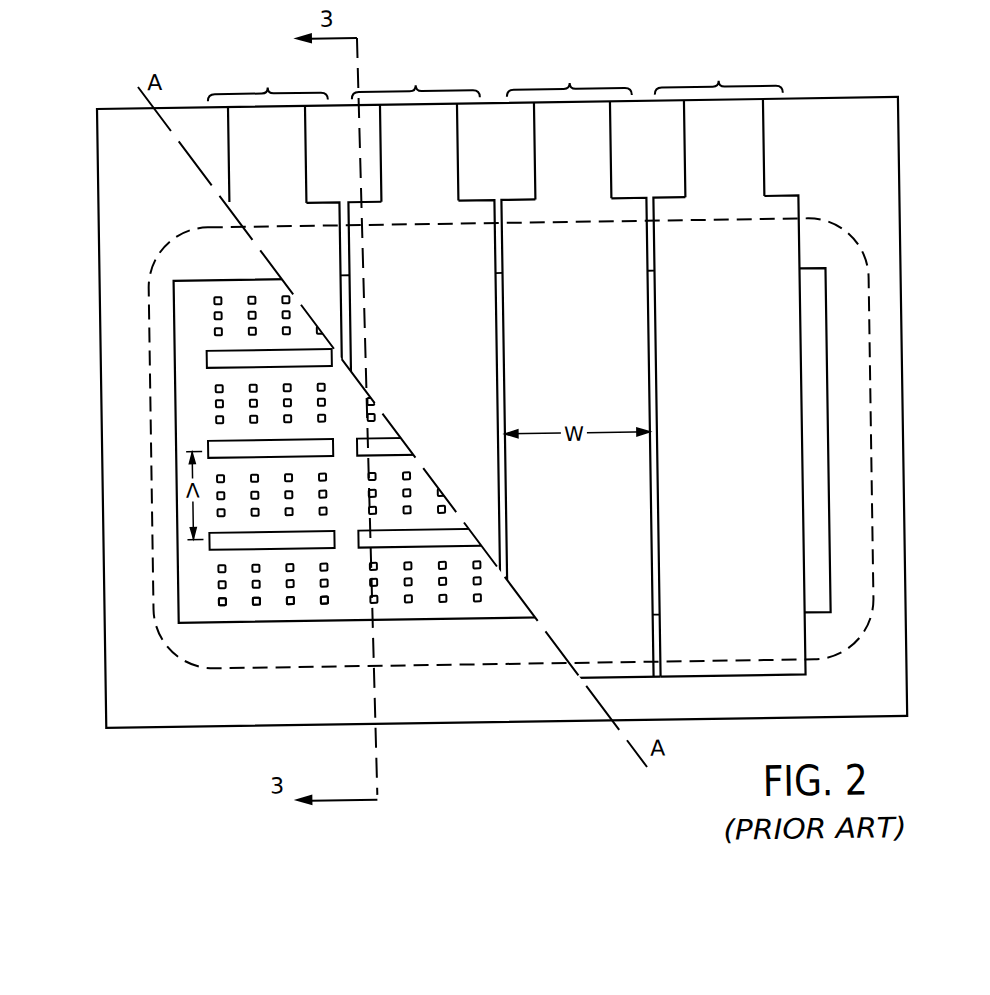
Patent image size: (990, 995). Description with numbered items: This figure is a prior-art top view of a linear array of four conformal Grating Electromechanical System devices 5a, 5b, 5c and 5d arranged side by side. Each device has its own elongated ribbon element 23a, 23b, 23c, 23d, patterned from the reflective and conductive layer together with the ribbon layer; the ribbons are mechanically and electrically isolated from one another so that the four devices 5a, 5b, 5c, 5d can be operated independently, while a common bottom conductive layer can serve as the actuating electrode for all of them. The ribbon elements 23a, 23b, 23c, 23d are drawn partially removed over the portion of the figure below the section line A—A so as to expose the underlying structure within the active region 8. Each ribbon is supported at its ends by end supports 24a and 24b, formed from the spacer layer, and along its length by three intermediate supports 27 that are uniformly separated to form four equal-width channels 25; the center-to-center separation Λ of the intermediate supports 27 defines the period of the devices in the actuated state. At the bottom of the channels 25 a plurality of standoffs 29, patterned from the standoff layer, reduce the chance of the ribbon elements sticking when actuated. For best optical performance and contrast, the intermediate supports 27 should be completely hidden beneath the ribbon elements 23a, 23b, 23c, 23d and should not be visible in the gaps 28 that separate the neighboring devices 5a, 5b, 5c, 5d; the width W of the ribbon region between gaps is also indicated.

The conformal GEMS device 5a is at (267, 80).
The conformal GEMS device 5b is at (415, 76).
The conformal GEMS device 5c is at (569, 74).
The conformal GEMS device 5d is at (718, 71).
The active region 8 is at (172, 651).
The elongated ribbon element 23a is at (278, 170).
The elongated ribbon element 23b is at (436, 173).
The elongated ribbon element 23c is at (588, 173).
The elongated ribbon element 23d is at (741, 170).
The end support 24a is at (808, 263).
The end support 24b is at (805, 642).
The channel 25 is at (187, 320).
The intermediate support 27 is at (203, 361).
The gap 28 is at (345, 309).
The standoff 29 is at (215, 608).